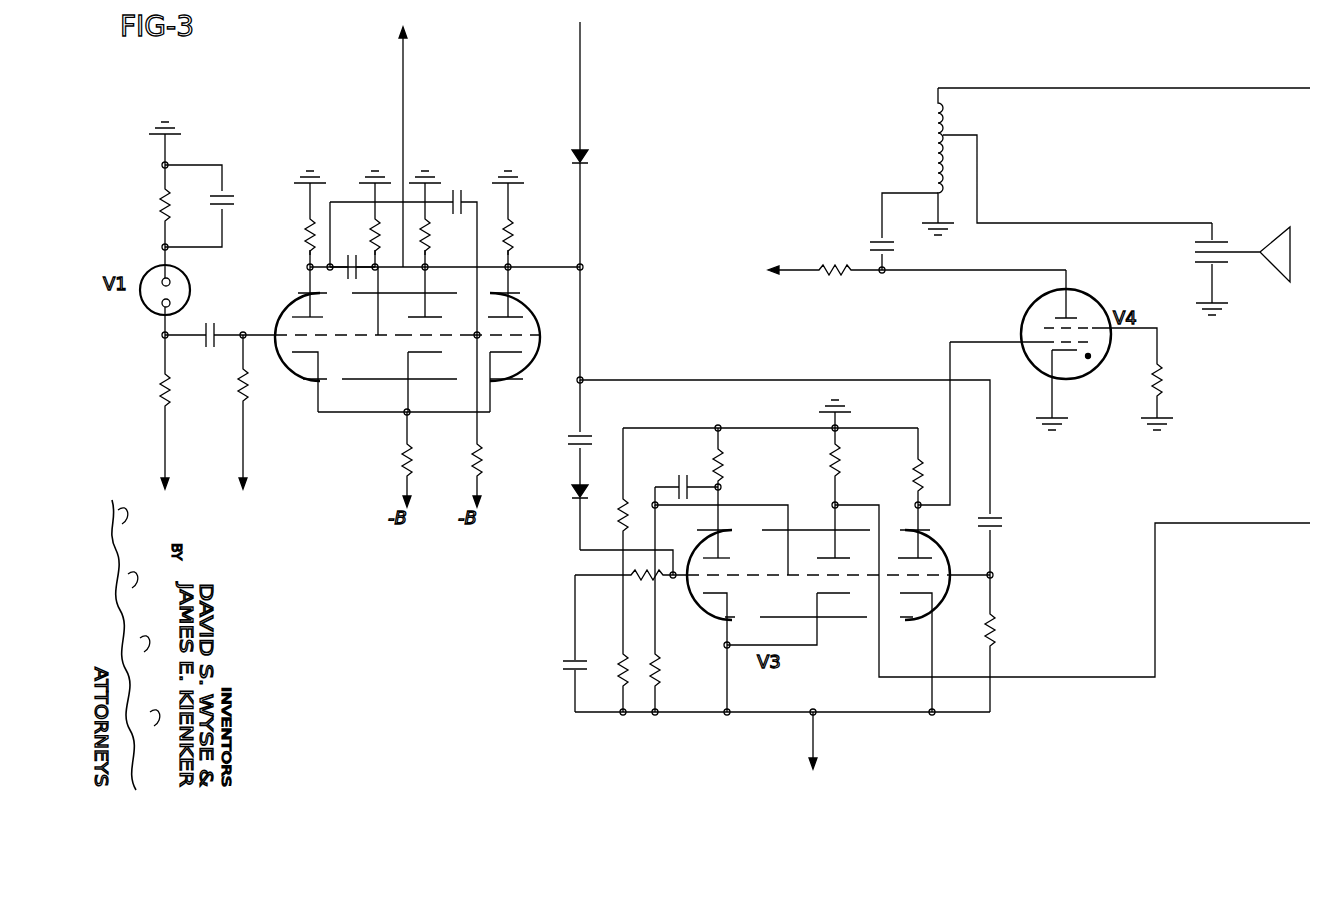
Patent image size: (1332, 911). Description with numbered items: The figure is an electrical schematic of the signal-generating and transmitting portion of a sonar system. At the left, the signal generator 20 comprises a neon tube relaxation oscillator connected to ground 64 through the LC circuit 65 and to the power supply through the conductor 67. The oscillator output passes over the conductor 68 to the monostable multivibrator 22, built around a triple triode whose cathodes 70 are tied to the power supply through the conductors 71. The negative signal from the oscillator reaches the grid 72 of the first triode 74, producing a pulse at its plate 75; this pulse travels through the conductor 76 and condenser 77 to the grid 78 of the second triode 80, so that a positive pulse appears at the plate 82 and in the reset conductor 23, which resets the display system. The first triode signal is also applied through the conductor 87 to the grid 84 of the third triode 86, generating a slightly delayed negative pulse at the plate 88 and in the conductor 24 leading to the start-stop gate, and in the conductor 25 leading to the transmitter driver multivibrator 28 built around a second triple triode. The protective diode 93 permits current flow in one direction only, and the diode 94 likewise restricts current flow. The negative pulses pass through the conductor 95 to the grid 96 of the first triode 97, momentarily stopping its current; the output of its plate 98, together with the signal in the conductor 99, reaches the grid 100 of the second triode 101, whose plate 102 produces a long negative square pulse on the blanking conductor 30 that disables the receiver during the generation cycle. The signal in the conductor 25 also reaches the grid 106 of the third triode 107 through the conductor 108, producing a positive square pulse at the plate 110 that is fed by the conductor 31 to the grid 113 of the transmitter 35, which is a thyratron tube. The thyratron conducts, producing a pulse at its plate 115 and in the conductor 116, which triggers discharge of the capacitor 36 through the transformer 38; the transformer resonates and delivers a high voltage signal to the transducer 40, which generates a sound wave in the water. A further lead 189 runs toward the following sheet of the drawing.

The signal generator 20 is at (148, 226).
The monostable multivibrator 22 is at (380, 442).
The reset conductor 23 is at (403, 60).
The conductor 24 is at (580, 61).
The conductor 25 is at (582, 300).
The transmitter driver multivibrator 28 is at (920, 723).
The blanking conductor 30 is at (1216, 523).
The conductor 31 is at (950, 411).
The transmitter 35 is at (1081, 382).
The capacitor 36 is at (880, 244).
The transformer 38 is at (925, 133).
The transducer 40 is at (1264, 238).
The ground 64 is at (151, 123).
The LC circuit 65 is at (217, 170).
The conductor 67 is at (165, 444).
The conductor 68 is at (246, 333).
The cathodes 70 is at (316, 388).
The conductors 71 is at (364, 414).
The grid 72 is at (326, 340).
The first triode 74 is at (278, 370).
The plate 75 is at (320, 316).
The conductor 76 is at (306, 280).
The condenser 77 is at (350, 252).
The grid 78 is at (396, 338).
The second triode 80 is at (418, 381).
The plate 82 is at (444, 315).
The grid 84 is at (526, 334).
The third triode 86 is at (542, 358).
The conductor 87 is at (476, 265).
The plate 88 is at (514, 318).
The protective diode 93 is at (570, 152).
The diode 94 is at (568, 487).
The conductor 95 is at (574, 551).
The grid 96 is at (736, 573).
The first triode 97 is at (690, 614).
The plate 98 is at (731, 555).
The conductor 99 is at (658, 642).
The grid 100 is at (796, 576).
The second triode 101 is at (857, 623).
The plate 102 is at (846, 555).
The grid 106 is at (944, 574).
The third triode 107 is at (950, 606).
The conductor 108 is at (996, 535).
The plate 110 is at (908, 554).
The grid 113 is at (1043, 340).
The plate 115 is at (1072, 316).
The conductor 116 is at (964, 270).
The line to FIG-4 189 is at (1112, 90).